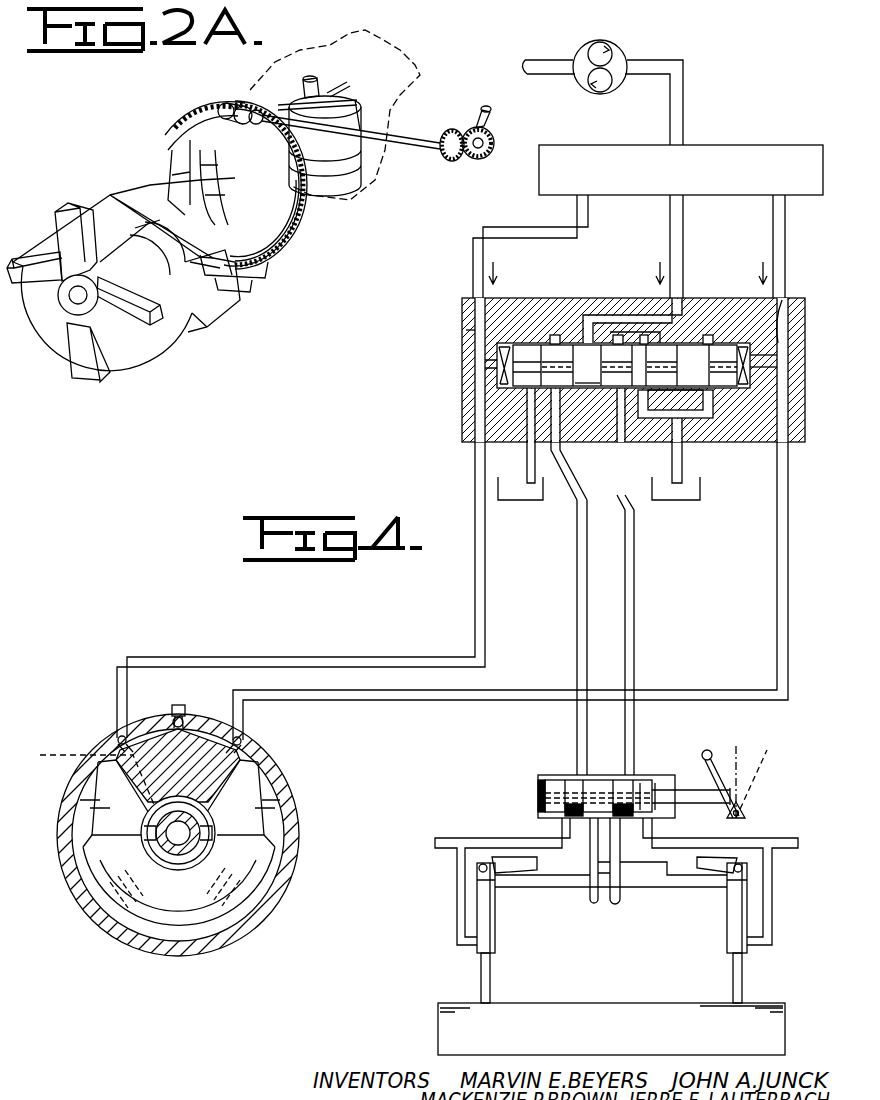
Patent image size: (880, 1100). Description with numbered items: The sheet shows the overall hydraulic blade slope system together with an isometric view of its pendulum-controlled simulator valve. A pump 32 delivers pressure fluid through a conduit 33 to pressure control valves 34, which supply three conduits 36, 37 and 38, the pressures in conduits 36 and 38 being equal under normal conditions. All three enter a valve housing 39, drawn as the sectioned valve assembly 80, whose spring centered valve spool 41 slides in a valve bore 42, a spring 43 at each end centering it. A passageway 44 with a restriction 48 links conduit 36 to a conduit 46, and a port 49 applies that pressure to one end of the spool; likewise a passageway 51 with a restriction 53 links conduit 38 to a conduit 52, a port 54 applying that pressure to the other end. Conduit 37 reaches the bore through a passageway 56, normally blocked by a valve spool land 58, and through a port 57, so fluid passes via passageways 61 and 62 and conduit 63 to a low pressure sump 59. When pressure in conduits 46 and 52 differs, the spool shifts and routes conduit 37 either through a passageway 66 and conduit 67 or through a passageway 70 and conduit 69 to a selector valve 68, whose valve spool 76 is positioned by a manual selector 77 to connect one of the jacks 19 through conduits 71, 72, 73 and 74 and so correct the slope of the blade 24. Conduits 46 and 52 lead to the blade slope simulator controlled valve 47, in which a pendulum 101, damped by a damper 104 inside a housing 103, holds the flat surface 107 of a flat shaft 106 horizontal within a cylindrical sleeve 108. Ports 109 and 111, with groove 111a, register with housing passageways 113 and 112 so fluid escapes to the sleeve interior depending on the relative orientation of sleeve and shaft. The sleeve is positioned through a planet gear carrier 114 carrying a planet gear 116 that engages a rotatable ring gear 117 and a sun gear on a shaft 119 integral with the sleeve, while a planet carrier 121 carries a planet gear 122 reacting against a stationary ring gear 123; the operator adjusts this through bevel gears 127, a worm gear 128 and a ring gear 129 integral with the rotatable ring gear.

In FIG. 4, the jacks 19 is at (477, 952).
In FIG. 4, the blade 24 is at (540, 1003).
In FIG. 4, the pump 32 is at (626, 45).
In FIG. 4, the conduit 33 is at (684, 98).
In FIG. 4, the pressure control valves 34 is at (641, 145).
In FIG. 4, the conduit 36 is at (577, 215).
In FIG. 4, the conduit 37 is at (670, 223).
In FIG. 4, the conduit 38 is at (773, 215).
In FIG. 4, the valve housing 39 is at (582, 298).
In FIG. 4, the valve spool 41 is at (525, 343).
In FIG. 4, the valve bore 42 is at (688, 343).
In FIG. 4, the spring 43 is at (730, 343).
In FIG. 4, the passageway 44 is at (475, 413).
In FIG. 4, the conduit 46 is at (485, 545).
In FIG. 4, the blade slope simulator controlled valve 47 is at (80, 746).
In FIG. 4, the restriction 48 is at (468, 320).
In FIG. 4, the port 49 is at (487, 367).
In FIG. 4, the passageway 51 is at (788, 337).
In FIG. 4, the conduit 52 is at (777, 530).
In FIG. 4, the restriction 53 is at (790, 300).
In FIG. 4, the port 54 is at (768, 367).
In FIG. 4, the passageway 56 is at (628, 312).
In FIG. 4, the port 57 is at (625, 365).
In FIG. 4, the valve spool land 58 is at (587, 363).
In FIG. 4, the low pressure sump 59 is at (700, 487).
In FIG. 4, the passageway 61 is at (690, 420).
In FIG. 4, the passageway 62 is at (630, 435).
In FIG. 4, the conduit 63 is at (672, 467).
In FIG. 4, the passageway 66 is at (610, 440).
In FIG. 4, the conduit 67 is at (635, 565).
In FIG. 4, the selector valve 68 is at (545, 773).
In FIG. 4, the conduit 69 is at (577, 587).
In FIG. 4, the passageway 70 is at (555, 445).
In FIG. 4, the conduit 71 is at (590, 866).
In FIG. 4, the conduit 72 is at (622, 870).
In FIG. 4, the conduit 73 is at (505, 838).
In FIG. 4, the conduit 74 is at (680, 842).
In FIG. 4, the valve spool 76 is at (643, 780).
In FIG. 4, the manual selector 77 is at (720, 780).
In FIG. 4, the valve body 80 is at (612, 381).
In FIG. 2A, the pendulum 101 is at (140, 358).
In FIG. 4, the pendulum 101 is at (185, 912).
In FIG. 4, the housing 103 is at (278, 892).
In FIG. 2A, the damper 104 is at (78, 360).
In FIG. 2A, the flat shaft 106 is at (172, 226).
In FIG. 4, the flat shaft 106 is at (170, 868).
In FIG. 4, the flat surface 107 is at (150, 790).
In FIG. 2A, the cylindrical sleeve 108 is at (203, 258).
In FIG. 4, the cylindrical sleeve 108 is at (156, 822).
In FIG. 4, the port 109 is at (212, 826).
In FIG. 4, the port 111 is at (166, 831).
In FIG. 4, the groove 111a is at (200, 840).
In FIG. 4, the passageway 112 is at (250, 745).
In FIG. 4, the passageway 113 is at (72, 757).
In FIG. 2A, the planet gear carrier 114 is at (232, 146).
In FIG. 2A, the planet gear 116 is at (270, 256).
In FIG. 2A, the rotatable ring gear 117 is at (215, 108).
In FIG. 2A, the shaft 119 is at (230, 190).
In FIG. 2A, the planet carrier 121 is at (130, 192).
In FIG. 2A, the planet gear 122 is at (240, 280).
In FIG. 2A, the stationary ring gear 123 is at (298, 238).
In FIG. 2A, the bevel gears 127 is at (468, 160).
In FIG. 2A, the worm gear 128 is at (248, 105).
In FIG. 2A, the ring gear 129 is at (312, 195).